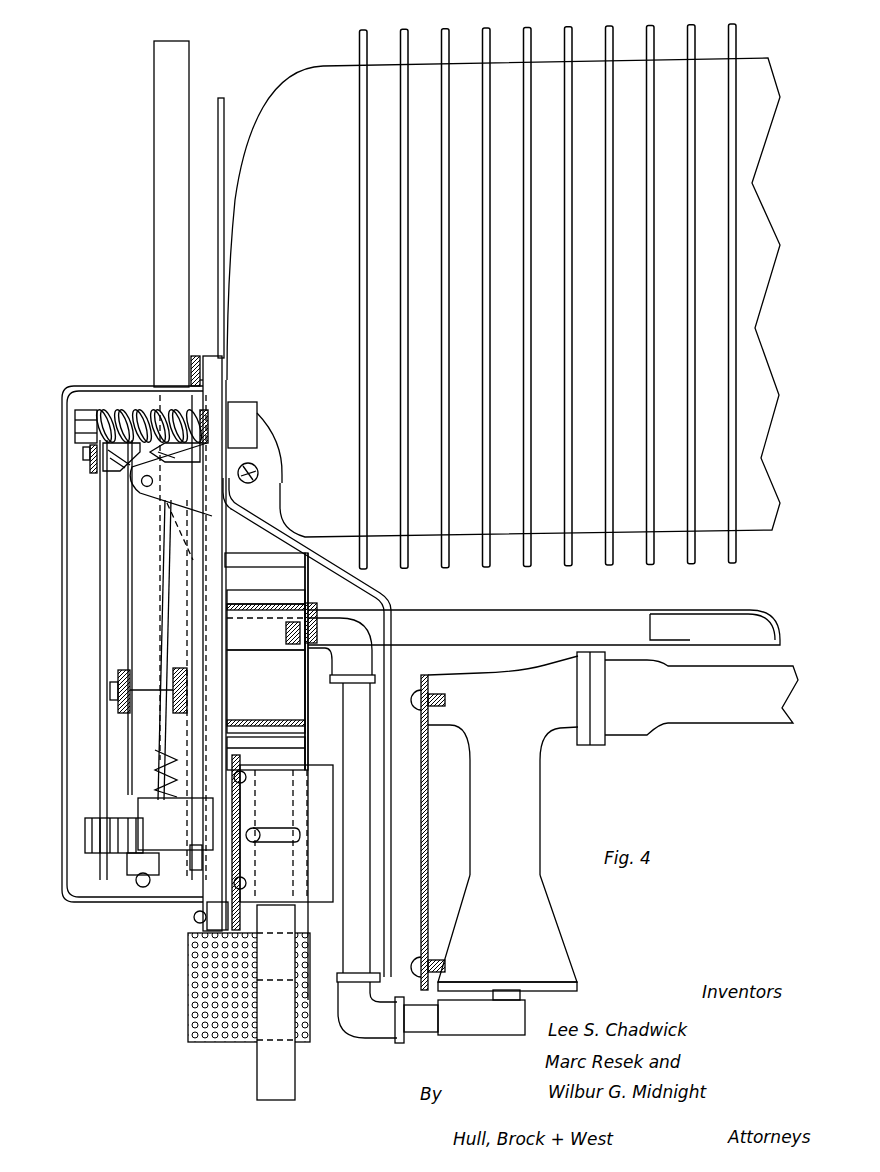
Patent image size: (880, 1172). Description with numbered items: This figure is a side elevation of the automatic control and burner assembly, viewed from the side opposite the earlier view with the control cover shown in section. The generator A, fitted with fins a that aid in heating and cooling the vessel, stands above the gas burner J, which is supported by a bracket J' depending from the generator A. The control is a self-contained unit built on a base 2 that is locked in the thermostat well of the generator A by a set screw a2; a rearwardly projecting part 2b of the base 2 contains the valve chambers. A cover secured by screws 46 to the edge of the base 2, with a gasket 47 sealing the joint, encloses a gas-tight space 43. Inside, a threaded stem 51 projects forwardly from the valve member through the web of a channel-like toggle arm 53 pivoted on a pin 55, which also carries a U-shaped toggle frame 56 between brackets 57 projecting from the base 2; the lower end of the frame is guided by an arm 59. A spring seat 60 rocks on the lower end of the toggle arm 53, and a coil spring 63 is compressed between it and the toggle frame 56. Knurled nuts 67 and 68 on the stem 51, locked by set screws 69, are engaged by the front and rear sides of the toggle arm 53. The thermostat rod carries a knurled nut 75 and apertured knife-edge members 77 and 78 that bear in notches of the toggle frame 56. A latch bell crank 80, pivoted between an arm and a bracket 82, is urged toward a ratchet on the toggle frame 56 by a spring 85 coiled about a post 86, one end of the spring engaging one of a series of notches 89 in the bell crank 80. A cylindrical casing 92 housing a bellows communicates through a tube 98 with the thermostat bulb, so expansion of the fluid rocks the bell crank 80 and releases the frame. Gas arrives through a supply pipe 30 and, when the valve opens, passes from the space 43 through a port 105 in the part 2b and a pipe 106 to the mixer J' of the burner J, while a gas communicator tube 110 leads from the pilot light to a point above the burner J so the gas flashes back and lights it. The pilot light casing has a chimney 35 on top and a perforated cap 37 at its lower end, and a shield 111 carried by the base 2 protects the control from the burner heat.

The chimney 35 is at (160, 194).
The shield 111 is at (225, 213).
The generator A is at (503, 297).
The fins a is at (652, 290).
The set screw a2 is at (259, 473).
The base 2 is at (215, 370).
The rearwardly projecting part 2b is at (292, 700).
The screws 46 is at (194, 368).
The gasket 47 is at (208, 354).
The space 43 is at (76, 672).
The knurled nut 75 is at (88, 462).
The post 86 is at (128, 410).
The apertured knife-edge bearing member 77 is at (118, 471).
The apertured knife-edge bearing member 78 is at (180, 456).
The pin 55 is at (147, 488).
The brackets 57 is at (215, 512).
The toggle frame 56 is at (140, 552).
The spring 85 is at (222, 577).
The port 105 is at (307, 727).
The pipe 106 is at (345, 843).
The gas communicator tube 110 is at (553, 620).
The toggle arm 53 is at (165, 655).
The set screws 69 is at (118, 690).
The threaded stem 51 is at (118, 700).
The knurled nut 67 is at (122, 713).
The knurled nut 68 is at (185, 712).
The spring seat 60 is at (180, 748).
The coil spring 63 is at (155, 782).
The arm 59 is at (175, 824).
The bell crank 80 is at (86, 828).
The notches 89 is at (120, 840).
The bracket 82 is at (192, 866).
The cylindrical casing 92 is at (276, 880).
The tube 98 is at (280, 828).
The perforated cap 37 is at (188, 1000).
The supply pipe 30 is at (265, 1055).
The gas burner J is at (687, 709).
The bracket J' is at (502, 823).